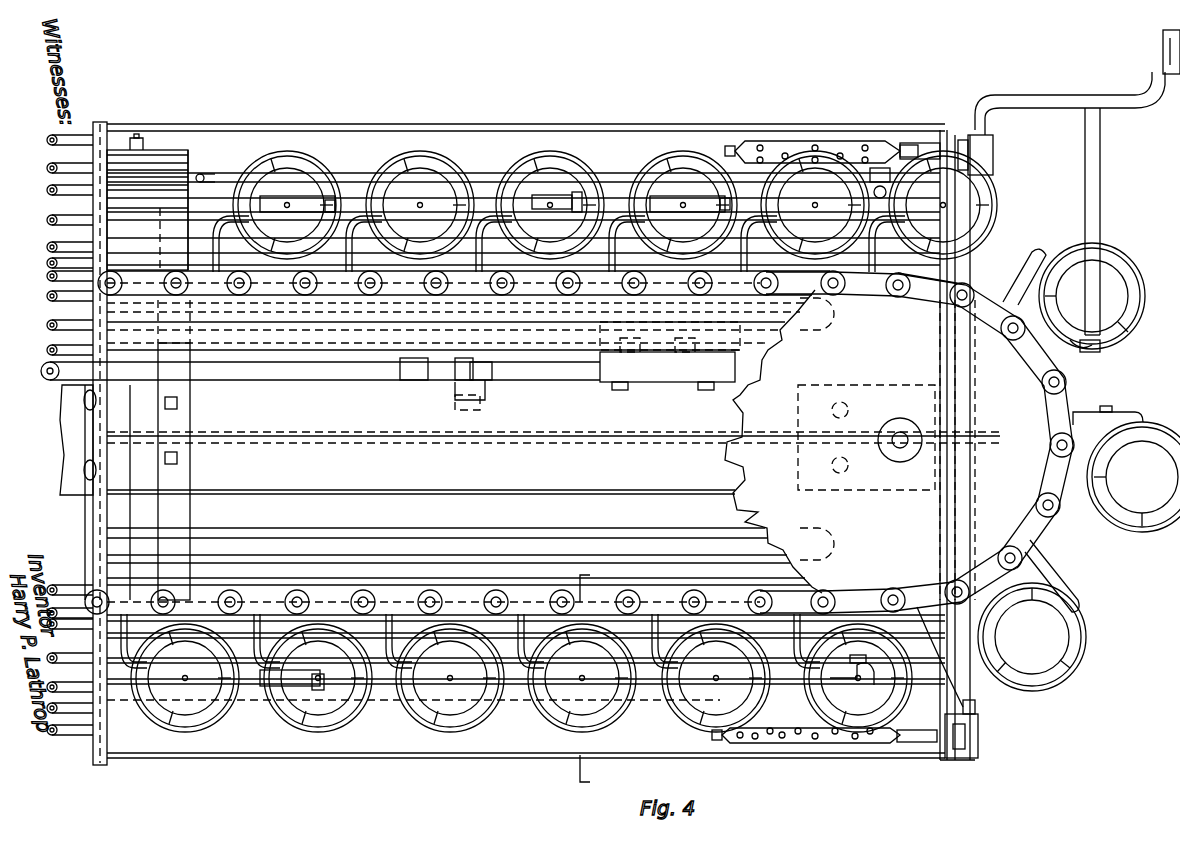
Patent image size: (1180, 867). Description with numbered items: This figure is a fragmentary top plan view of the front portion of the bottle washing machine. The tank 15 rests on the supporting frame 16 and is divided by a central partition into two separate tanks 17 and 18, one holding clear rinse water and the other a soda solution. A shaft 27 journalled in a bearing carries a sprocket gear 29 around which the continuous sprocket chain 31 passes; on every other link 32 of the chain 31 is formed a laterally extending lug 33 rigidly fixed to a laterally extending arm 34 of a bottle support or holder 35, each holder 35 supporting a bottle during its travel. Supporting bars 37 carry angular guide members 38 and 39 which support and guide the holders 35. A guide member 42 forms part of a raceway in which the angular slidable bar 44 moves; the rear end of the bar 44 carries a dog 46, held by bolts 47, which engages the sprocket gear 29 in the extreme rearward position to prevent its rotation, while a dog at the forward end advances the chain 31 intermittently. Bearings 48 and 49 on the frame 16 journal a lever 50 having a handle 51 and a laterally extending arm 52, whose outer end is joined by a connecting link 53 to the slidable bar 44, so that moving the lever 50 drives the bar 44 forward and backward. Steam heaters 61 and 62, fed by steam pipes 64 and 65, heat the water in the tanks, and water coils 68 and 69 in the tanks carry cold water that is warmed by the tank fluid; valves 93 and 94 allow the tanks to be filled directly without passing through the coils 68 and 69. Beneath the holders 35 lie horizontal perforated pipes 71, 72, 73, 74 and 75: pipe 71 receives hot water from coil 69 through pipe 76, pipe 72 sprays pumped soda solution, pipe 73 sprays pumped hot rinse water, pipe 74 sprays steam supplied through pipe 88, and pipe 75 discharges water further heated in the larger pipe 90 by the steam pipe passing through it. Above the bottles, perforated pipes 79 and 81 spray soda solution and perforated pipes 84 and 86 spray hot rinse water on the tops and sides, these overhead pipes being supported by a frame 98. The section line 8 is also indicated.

The section line 8 is at (595, 679).
The tank 15 is at (652, 145).
The supporting frame 16 is at (945, 125).
The tank 17 is at (470, 150).
The tank 18 is at (155, 747).
The shaft 27 is at (900, 450).
The sprocket gear 29 is at (1040, 410).
The sprocket chain 31 is at (1040, 370).
The link 32 is at (878, 283).
The laterally extending lug 33 is at (1072, 586).
The laterally extending arm 34 is at (1018, 272).
The bottle support or holder 35 is at (383, 170).
The supporting bar 37 is at (185, 512).
The angular guide member 38 is at (165, 150).
The angular guide member 39 is at (150, 735).
The angular guide member 42 is at (62, 343).
The angular slidable bar 44 is at (275, 352).
The dog 46 is at (600, 368).
The bolt 47 is at (640, 388).
The bearing 48 is at (989, 155).
The bearing 49 is at (978, 745).
The lever 50 is at (1020, 98).
The handle 51 is at (1162, 50).
The laterally extending arm 52 is at (1102, 212).
The connecting link 53 is at (1092, 355).
The steam heater 61 is at (773, 148).
The steam heater 62 is at (808, 745).
The steam pipe 64 is at (920, 143).
The steam pipe 65 is at (912, 745).
The water coil 68 is at (65, 312).
The water coil 69 is at (660, 548).
The perforated pipe 71 is at (656, 690).
The perforated pipe 72 is at (258, 690).
The perforated pipe 73 is at (67, 181).
The perforated pipe 74 is at (200, 180).
The perforated pipe 75 is at (565, 195).
The pipe 76 is at (852, 683).
The perforated pipe 79 is at (60, 750).
The perforated pipe 81 is at (62, 656).
The perforated pipe 84 is at (93, 135).
The perforated pipe 86 is at (62, 260).
The pipe 88 is at (515, 370).
The pipe 90 is at (348, 372).
The valve 93 is at (878, 165).
The valve 94 is at (975, 708).
The frame 98 is at (88, 453).